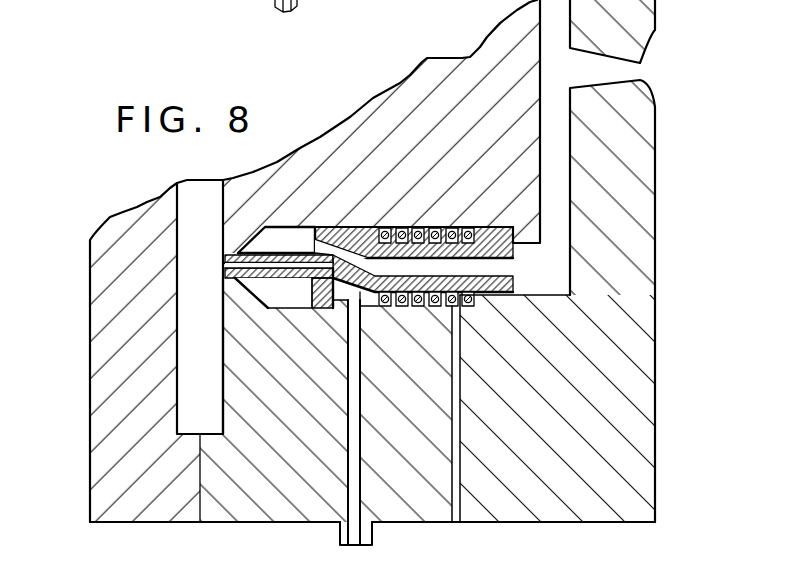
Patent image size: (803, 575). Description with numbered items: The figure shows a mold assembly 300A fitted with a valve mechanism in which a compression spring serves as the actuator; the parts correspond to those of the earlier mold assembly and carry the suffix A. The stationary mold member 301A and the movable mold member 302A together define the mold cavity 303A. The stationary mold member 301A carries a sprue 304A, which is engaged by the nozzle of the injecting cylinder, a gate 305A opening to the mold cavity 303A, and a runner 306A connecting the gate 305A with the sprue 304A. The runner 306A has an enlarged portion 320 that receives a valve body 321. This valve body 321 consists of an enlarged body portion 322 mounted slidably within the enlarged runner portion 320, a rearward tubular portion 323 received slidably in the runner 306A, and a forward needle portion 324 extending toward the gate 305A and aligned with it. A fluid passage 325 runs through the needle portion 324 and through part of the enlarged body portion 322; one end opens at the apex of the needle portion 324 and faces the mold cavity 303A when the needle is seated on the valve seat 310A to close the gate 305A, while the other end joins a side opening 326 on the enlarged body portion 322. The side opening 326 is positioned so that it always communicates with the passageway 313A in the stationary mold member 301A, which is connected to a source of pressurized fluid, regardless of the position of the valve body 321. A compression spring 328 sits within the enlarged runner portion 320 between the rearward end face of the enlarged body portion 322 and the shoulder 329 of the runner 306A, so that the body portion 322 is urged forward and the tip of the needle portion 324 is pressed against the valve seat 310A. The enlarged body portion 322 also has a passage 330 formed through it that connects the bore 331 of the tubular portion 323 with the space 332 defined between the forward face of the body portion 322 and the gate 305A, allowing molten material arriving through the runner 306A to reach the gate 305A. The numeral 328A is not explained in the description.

The mold assembly 300A is at (80, 393).
The stationary mold member 301A is at (633, 222).
The movable mold member 302A is at (102, 318).
The mold cavity 303A is at (188, 370).
The sprue 304A is at (612, 70).
The gate 305A is at (227, 270).
The runner 306A is at (555, 156).
The valve seat 310A is at (233, 254).
The passageway 313A is at (358, 454).
The enlarged portion of the runner 320 is at (288, 302).
The valve body 321 is at (359, 218).
The enlarged body portion 322 is at (373, 228).
The rearward tubular portion 323 is at (486, 294).
The forward needle portion 324 is at (302, 258).
The fluid passage 325 is at (273, 263).
The side opening 326 is at (343, 306).
The compression spring 328 is at (452, 231).
The partition plate 328A is at (458, 440).
The shoulder 329 is at (477, 238).
The passage 330 is at (325, 242).
The bore 331 is at (422, 273).
The space 332 is at (268, 298).